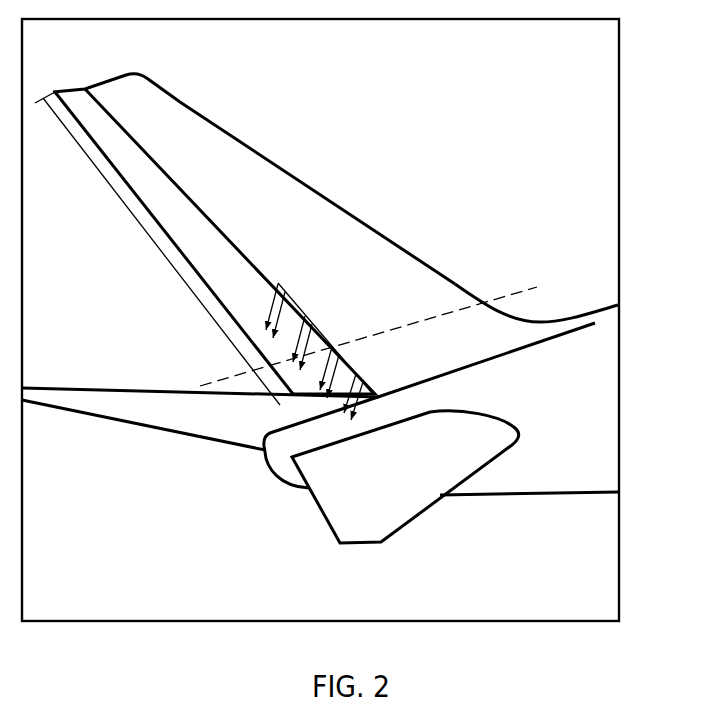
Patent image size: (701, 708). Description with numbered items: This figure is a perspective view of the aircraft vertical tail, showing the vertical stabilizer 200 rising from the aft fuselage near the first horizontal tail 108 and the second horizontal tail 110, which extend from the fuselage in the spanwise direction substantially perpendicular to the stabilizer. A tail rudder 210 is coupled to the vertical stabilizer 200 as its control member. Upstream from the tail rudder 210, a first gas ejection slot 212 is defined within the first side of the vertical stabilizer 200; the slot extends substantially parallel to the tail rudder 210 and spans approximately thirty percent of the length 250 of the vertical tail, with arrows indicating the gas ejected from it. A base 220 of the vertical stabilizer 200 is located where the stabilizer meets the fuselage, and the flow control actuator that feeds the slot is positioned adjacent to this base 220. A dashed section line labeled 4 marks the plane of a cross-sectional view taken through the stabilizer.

The vertical stabilizer 200 is at (208, 147).
The tail rudder 210 is at (183, 256).
The length 250 is at (112, 190).
The first gas ejection slot 212 is at (322, 325).
The base 220 is at (549, 307).
The second horizontal tail 110 is at (95, 403).
The first horizontal tail 108 is at (356, 497).
The section line 4- 4 is at (367, 326).